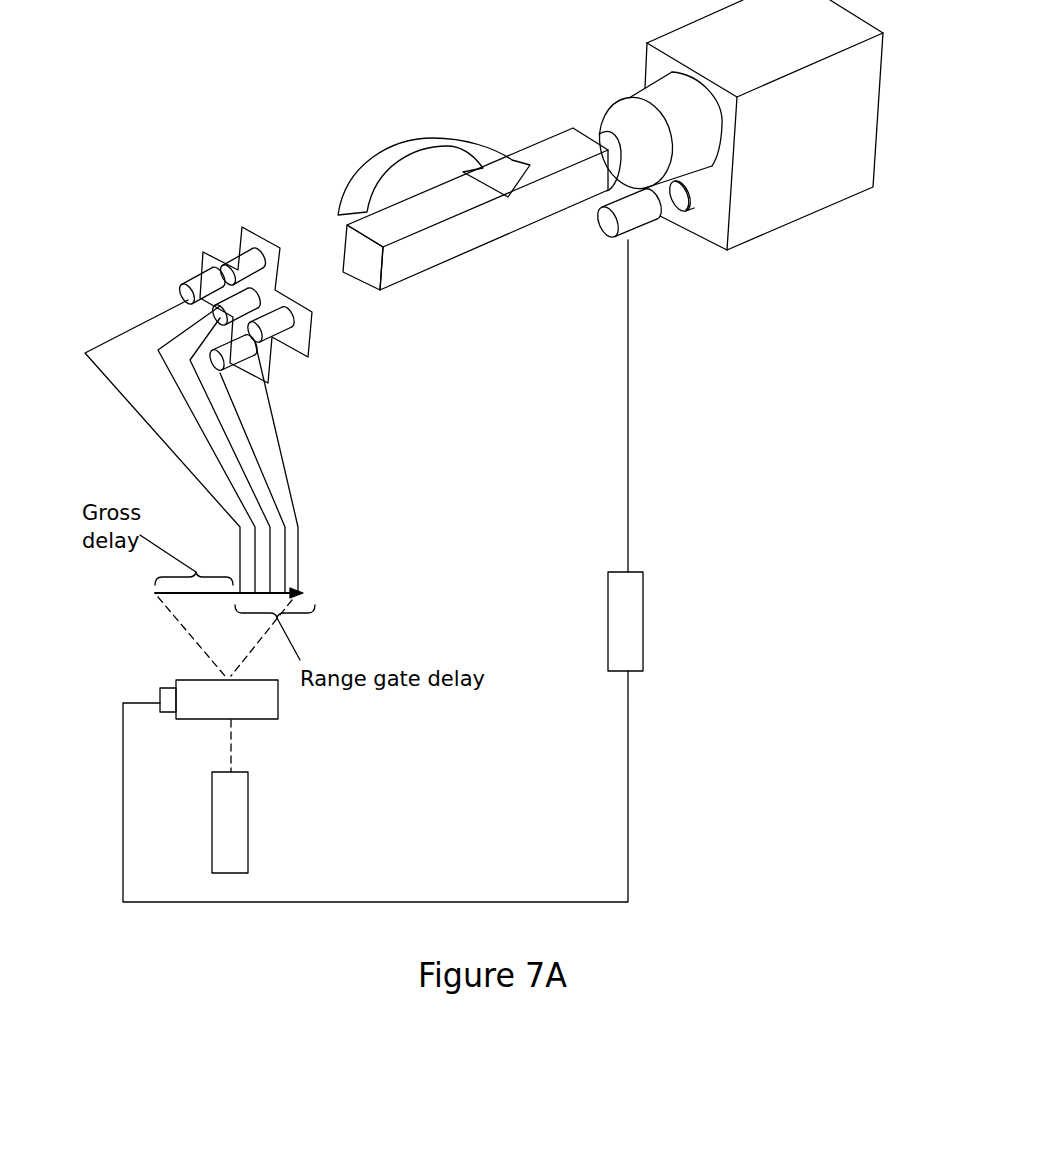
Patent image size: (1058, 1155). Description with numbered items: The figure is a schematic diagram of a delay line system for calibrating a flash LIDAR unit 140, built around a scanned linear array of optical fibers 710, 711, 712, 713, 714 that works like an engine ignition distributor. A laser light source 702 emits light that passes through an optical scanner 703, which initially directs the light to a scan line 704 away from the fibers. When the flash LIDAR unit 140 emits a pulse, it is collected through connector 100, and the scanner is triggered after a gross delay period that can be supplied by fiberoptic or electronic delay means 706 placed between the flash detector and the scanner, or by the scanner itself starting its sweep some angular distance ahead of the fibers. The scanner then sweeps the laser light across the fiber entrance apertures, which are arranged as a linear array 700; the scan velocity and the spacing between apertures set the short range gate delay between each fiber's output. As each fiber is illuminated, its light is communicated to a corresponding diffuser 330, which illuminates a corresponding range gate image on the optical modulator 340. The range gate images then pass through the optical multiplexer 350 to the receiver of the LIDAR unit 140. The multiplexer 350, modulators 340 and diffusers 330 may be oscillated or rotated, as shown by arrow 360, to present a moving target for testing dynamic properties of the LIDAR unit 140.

The connector 100 is at (638, 220).
The flash LIDAR unit 140 is at (737, 125).
The diffuser 330 is at (230, 277).
The optical modulator 340 is at (238, 262).
The optical multiplexer 350 is at (473, 251).
The arrow 360 is at (363, 177).
The linear array 700 is at (270, 594).
The laser light source 702 is at (230, 819).
The optical scanner 703 is at (255, 700).
The scan line 704 is at (193, 597).
The delay means 706 is at (628, 619).
The optical fiber 710 is at (280, 425).
The optical fiber 711 is at (265, 472).
The optical fiber 712 is at (207, 403).
The optical fiber 713 is at (168, 377).
The optical fiber 714 is at (128, 412).